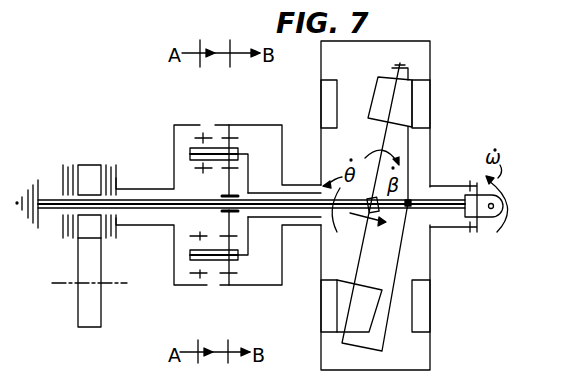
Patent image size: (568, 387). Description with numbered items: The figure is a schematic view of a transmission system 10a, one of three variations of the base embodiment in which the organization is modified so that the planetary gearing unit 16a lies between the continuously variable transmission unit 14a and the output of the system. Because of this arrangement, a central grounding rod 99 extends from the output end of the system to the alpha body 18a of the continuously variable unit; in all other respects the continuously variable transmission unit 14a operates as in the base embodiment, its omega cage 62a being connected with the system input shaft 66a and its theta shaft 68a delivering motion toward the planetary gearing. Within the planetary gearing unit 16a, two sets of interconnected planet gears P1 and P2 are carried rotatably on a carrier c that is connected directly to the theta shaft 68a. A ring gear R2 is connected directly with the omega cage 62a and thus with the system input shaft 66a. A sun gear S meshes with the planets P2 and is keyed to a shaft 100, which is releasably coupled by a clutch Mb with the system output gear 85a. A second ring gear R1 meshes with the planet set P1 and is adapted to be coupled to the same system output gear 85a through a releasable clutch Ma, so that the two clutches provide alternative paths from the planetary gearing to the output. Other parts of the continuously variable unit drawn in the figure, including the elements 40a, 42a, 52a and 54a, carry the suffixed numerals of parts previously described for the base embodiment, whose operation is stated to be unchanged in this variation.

The transmission system 10a is at (147, 113).
The planetary gearing unit 16a is at (190, 113).
The second ring gear R1 is at (174, 178).
The ring gear R2 is at (252, 125).
The planet gears P1 is at (200, 138).
The planet gears P2 is at (233, 138).
The sun gear S is at (229, 186).
The carrier c is at (250, 186).
The clutch Mb is at (72, 165).
The releasable clutch Ma is at (107, 165).
The system output gear 85a is at (93, 240).
The central grounding rod 99 is at (48, 210).
The shaft 100 is at (177, 225).
The theta shaft 68a is at (303, 193).
The omega cage 62a is at (441, 52).
The continuously variable transmission unit 14a is at (430, 118).
The system input shaft 66a is at (447, 186).
The alpha body 18a is at (399, 252).
The upper swash plate 40a is at (376, 103).
The lower swash plate 42a is at (370, 320).
The lower left bearing block 52a is at (321, 303).
The lower right bearing block 54a is at (430, 306).